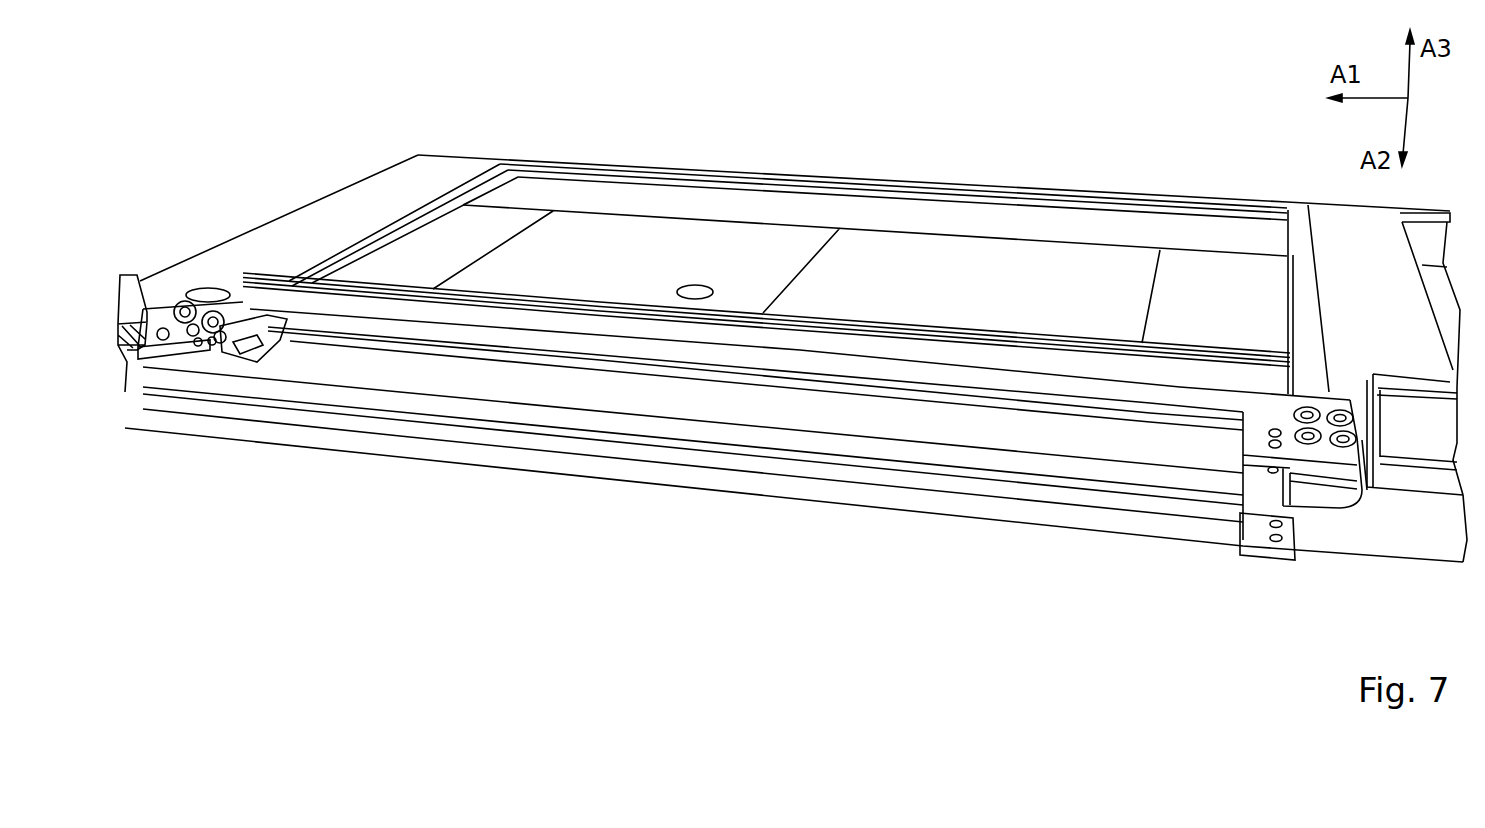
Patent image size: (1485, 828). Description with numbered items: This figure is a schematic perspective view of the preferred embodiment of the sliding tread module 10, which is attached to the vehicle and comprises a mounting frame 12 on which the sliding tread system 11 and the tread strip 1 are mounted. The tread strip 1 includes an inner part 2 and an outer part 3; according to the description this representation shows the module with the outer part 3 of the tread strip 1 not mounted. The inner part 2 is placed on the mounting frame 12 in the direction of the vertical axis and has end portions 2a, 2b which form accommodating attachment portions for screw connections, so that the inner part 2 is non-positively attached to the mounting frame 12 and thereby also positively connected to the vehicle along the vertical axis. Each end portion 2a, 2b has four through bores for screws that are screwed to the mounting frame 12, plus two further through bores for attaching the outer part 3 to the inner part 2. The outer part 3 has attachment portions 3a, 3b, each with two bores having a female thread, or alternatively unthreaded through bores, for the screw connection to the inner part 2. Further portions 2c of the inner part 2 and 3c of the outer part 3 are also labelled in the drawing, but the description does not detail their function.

The tread strip 1 is at (416, 516).
The inner part 2 is at (1000, 408).
The end portion 2a is at (210, 349).
The end portion 2b is at (1260, 442).
The guide profile 2c is at (925, 373).
The outer part 3 is at (617, 505).
The attachment portion 3a is at (126, 395).
The attachment portion 3b is at (1253, 537).
The guide profile 3c is at (750, 435).
The sliding tread module 10 is at (622, 126).
The sliding tread system 11 is at (965, 252).
The mounting frame 12 is at (292, 228).